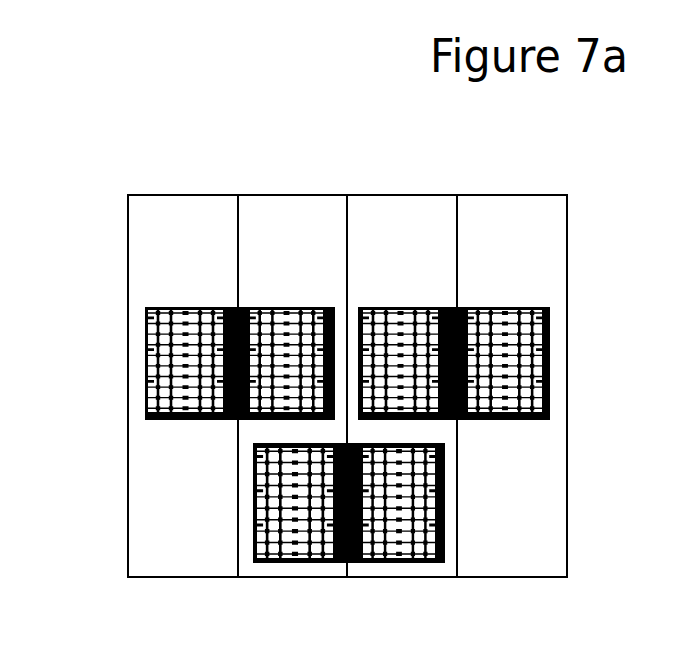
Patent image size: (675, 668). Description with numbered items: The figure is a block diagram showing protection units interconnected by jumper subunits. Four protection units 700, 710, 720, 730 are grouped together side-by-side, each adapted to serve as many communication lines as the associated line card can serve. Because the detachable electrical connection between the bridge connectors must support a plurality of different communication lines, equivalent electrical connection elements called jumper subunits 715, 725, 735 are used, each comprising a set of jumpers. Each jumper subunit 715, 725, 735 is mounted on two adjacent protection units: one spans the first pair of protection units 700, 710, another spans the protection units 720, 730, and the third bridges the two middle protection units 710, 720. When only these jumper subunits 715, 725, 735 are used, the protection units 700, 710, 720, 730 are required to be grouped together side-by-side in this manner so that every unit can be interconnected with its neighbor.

The protection unit 700 is at (155, 195).
The protection unit 710 is at (305, 195).
The protection unit 720 is at (373, 195).
The protection unit 730 is at (502, 195).
The jumper subunit 715 is at (147, 358).
The jumper subunit 725 is at (392, 563).
The jumper subunit 735 is at (522, 422).